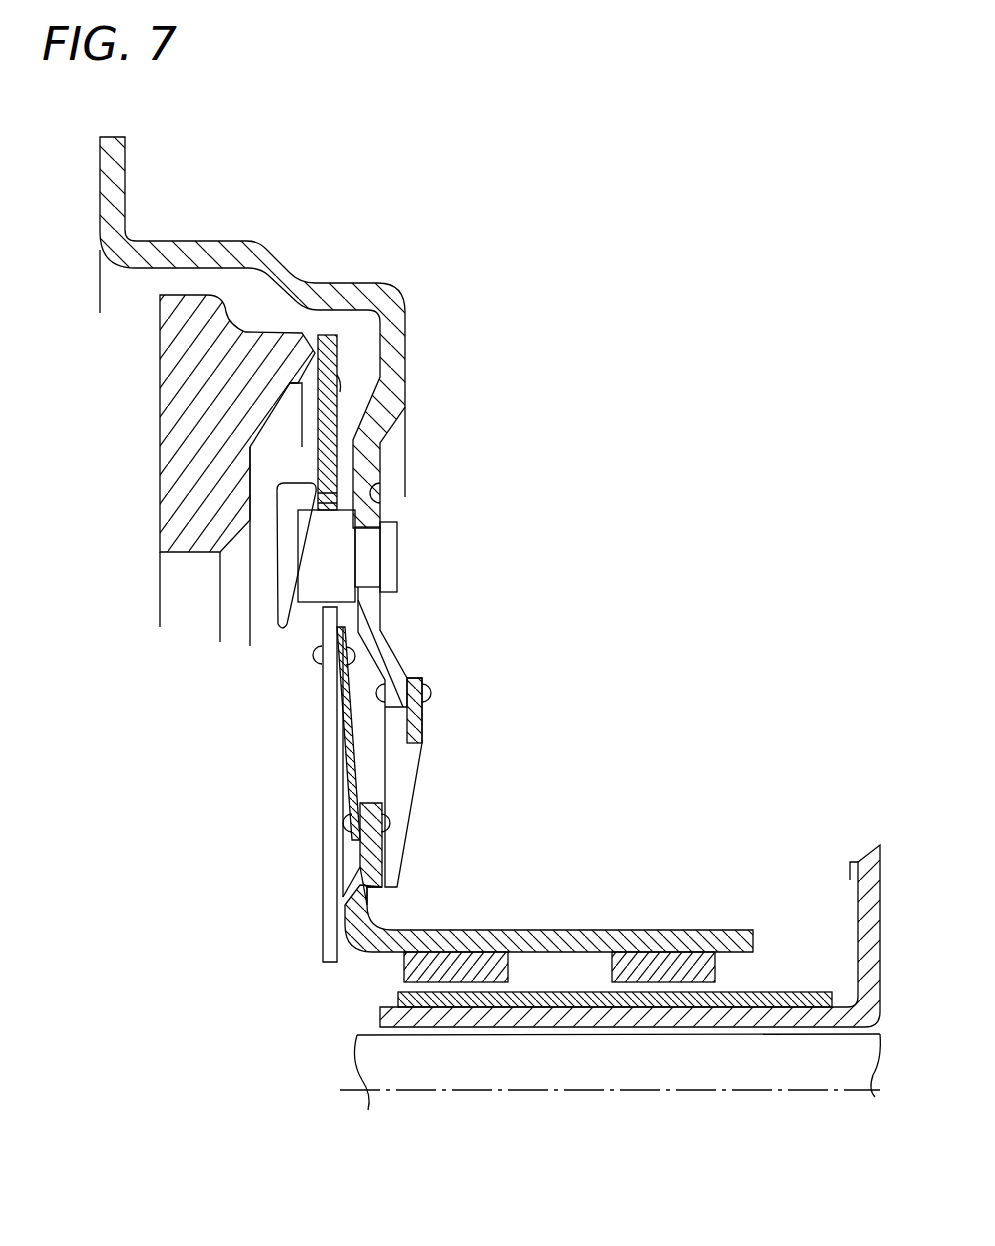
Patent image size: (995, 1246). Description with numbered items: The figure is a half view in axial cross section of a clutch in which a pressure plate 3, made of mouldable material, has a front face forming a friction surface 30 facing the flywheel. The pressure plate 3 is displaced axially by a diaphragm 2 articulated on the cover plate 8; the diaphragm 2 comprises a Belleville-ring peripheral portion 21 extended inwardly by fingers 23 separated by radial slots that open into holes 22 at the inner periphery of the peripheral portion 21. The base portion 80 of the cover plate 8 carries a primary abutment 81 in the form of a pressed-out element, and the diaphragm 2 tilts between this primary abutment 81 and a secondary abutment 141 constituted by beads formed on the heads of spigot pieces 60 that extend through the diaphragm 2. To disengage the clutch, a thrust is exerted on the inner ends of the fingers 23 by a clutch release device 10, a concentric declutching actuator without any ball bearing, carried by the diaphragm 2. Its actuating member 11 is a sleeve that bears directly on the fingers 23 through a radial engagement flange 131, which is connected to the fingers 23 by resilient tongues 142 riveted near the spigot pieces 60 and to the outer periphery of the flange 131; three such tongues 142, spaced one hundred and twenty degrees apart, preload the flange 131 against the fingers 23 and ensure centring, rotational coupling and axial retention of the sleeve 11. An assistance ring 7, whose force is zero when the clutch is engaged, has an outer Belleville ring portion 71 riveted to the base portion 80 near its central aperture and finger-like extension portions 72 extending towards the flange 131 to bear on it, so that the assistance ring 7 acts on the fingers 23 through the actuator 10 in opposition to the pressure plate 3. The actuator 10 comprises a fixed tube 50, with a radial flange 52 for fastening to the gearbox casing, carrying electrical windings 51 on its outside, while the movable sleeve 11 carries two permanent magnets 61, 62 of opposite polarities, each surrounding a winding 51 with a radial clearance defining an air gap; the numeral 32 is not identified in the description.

The diaphragm 2 is at (320, 779).
The pressure plate 3 is at (236, 299).
The assistance ring 7 is at (416, 797).
The cover plate 8 is at (350, 280).
The clutch release device 10 is at (602, 898).
The actuating member 11 is at (385, 960).
The peripheral portion 21 is at (339, 382).
The holes 22 is at (325, 504).
The fingers 23 is at (322, 722).
The friction surface 30 is at (160, 400).
The insert strip 32 is at (332, 356).
The fixed tube 50 is at (752, 1032).
The electrical winding 51 is at (465, 1008).
The radial flange 52 is at (866, 897).
The spigot piece 60 is at (402, 545).
The permanent magnet 61 is at (455, 970).
The permanent magnet 62 is at (670, 965).
The Belleville ring portion 71 is at (426, 722).
The extension portions 72 is at (400, 850).
The base portion 80 is at (406, 348).
The primary abutment 81 is at (337, 470).
The radial engagement flange 131 is at (362, 863).
The secondary abutment 141 is at (320, 480).
The resilient tongues 142 is at (353, 752).